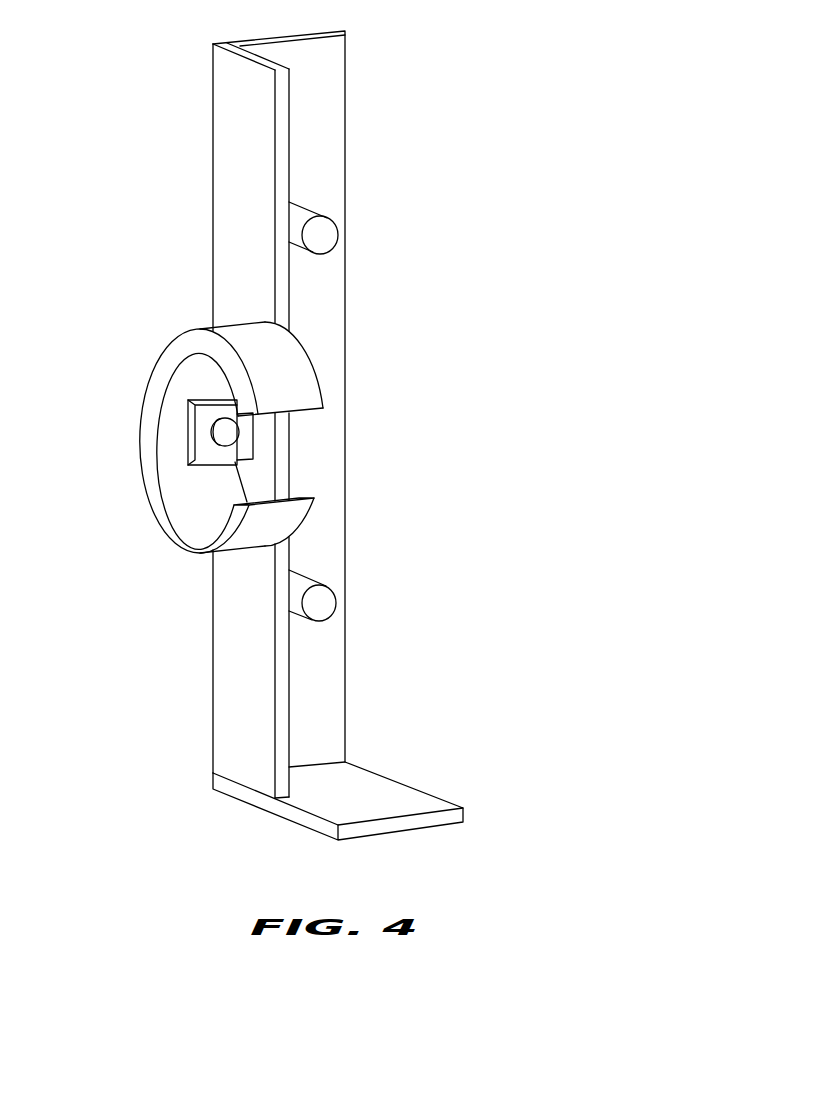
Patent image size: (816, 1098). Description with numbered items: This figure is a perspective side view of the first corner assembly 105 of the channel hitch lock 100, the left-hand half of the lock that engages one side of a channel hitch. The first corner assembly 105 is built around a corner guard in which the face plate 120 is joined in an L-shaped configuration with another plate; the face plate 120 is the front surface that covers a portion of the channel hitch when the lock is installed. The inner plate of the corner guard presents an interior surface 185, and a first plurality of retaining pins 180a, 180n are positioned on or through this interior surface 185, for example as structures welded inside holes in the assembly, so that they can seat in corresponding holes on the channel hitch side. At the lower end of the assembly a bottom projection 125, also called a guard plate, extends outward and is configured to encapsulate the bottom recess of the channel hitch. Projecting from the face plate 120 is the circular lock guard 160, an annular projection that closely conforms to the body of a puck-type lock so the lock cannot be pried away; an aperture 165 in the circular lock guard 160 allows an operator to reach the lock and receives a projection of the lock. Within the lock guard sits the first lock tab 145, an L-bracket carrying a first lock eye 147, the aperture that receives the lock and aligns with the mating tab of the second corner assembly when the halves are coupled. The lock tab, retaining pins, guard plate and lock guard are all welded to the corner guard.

The first corner assembly 105 is at (269, 431).
The channel hitch lock 100 is at (275, 414).
The face plate 120 is at (216, 652).
The interior surface 185 is at (331, 396).
The retaining pin 180a is at (322, 231).
The retaining pin 180n is at (321, 602).
The bottom projection 125 is at (370, 798).
The circular lock guard 160 is at (225, 429).
The aperture 165 is at (320, 458).
The first lock tab 145 is at (130, 435).
The first lock eye 147 is at (225, 447).